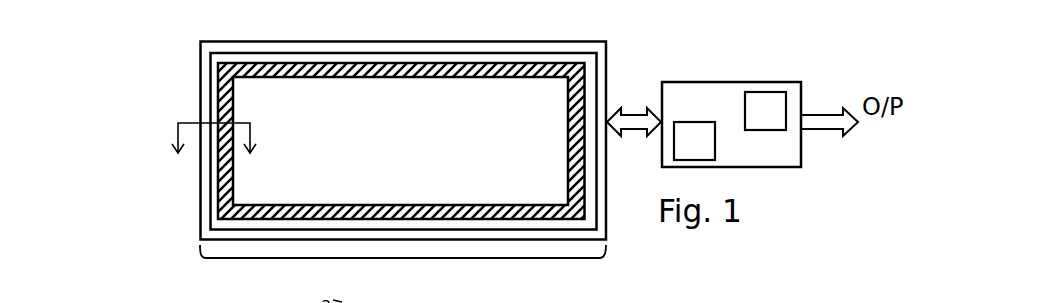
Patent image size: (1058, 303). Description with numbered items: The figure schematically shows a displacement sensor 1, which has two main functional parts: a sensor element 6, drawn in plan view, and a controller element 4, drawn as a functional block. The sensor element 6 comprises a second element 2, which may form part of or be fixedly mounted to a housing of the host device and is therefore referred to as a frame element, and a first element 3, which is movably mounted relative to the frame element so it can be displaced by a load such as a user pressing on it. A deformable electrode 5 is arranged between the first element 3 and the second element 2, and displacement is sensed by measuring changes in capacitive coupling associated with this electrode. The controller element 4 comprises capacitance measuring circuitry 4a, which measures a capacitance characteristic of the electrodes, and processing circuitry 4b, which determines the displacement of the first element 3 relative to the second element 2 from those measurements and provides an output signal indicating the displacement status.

The displacement sensor 1 is at (145, 105).
The second element 2 is at (440, 47).
The first element 3 is at (507, 50).
The controller element 4 is at (770, 82).
The capacitance measuring circuitry 4a is at (765, 111).
The processing circuitry 4b is at (694, 141).
The deformable electrode 5 is at (472, 63).
The sensor element 6 is at (403, 258).